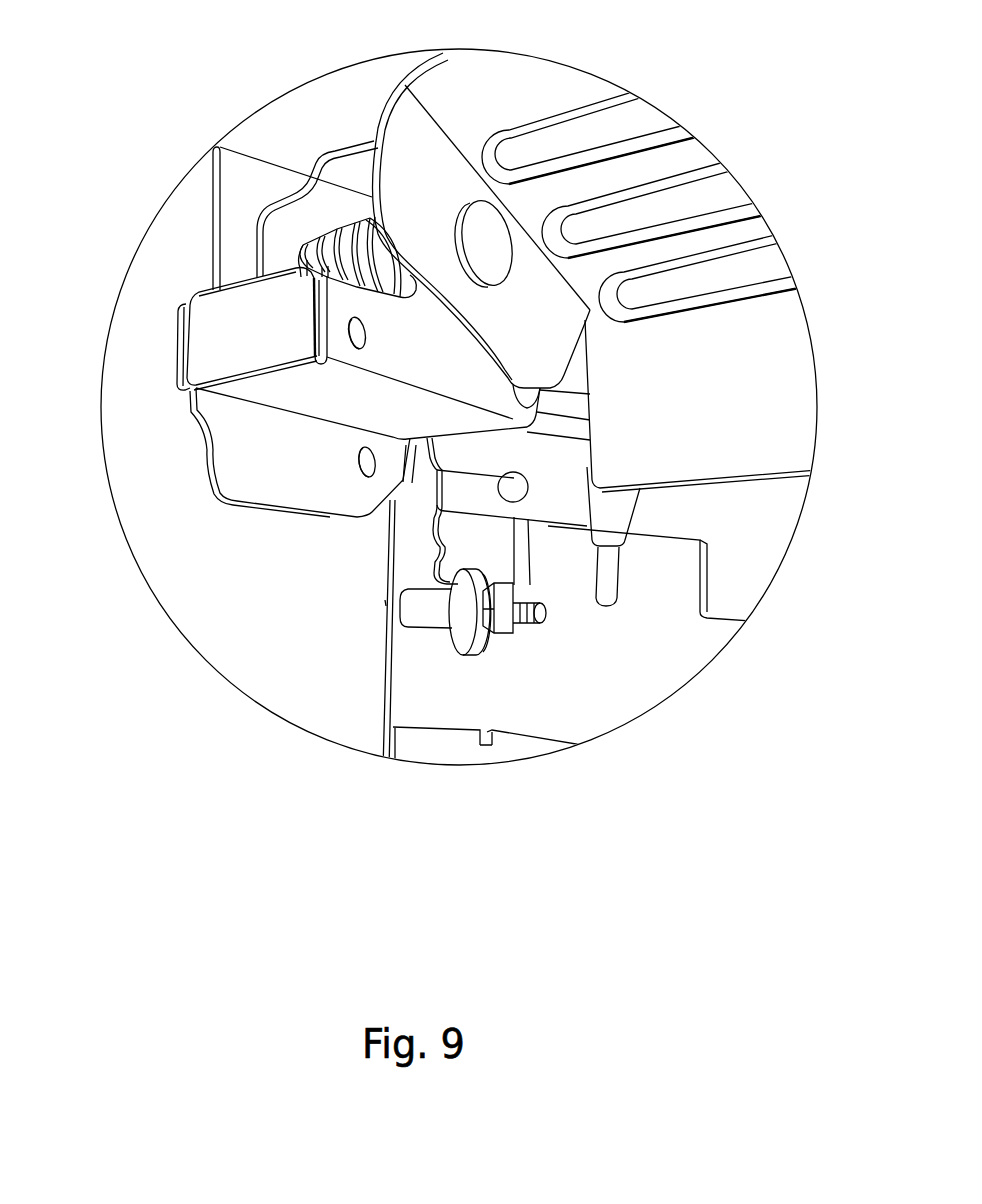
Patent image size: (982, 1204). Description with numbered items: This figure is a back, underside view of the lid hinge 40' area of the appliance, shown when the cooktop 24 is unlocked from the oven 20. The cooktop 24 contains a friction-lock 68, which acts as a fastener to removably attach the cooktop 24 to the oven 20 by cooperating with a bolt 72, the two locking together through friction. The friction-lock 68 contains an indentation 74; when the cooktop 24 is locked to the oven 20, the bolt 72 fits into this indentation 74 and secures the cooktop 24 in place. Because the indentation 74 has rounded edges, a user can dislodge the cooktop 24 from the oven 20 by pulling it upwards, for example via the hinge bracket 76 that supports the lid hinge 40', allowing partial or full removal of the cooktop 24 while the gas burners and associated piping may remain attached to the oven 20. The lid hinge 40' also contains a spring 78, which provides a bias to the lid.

The oven 20 is at (382, 723).
The cooktop 24 is at (601, 258).
The lid hinge 40' is at (214, 215).
The friction-lock 68 is at (445, 567).
The bolt 72 is at (417, 607).
The indentation 74 is at (445, 533).
The hinge bracket 76 is at (177, 354).
The spring 78 is at (357, 221).